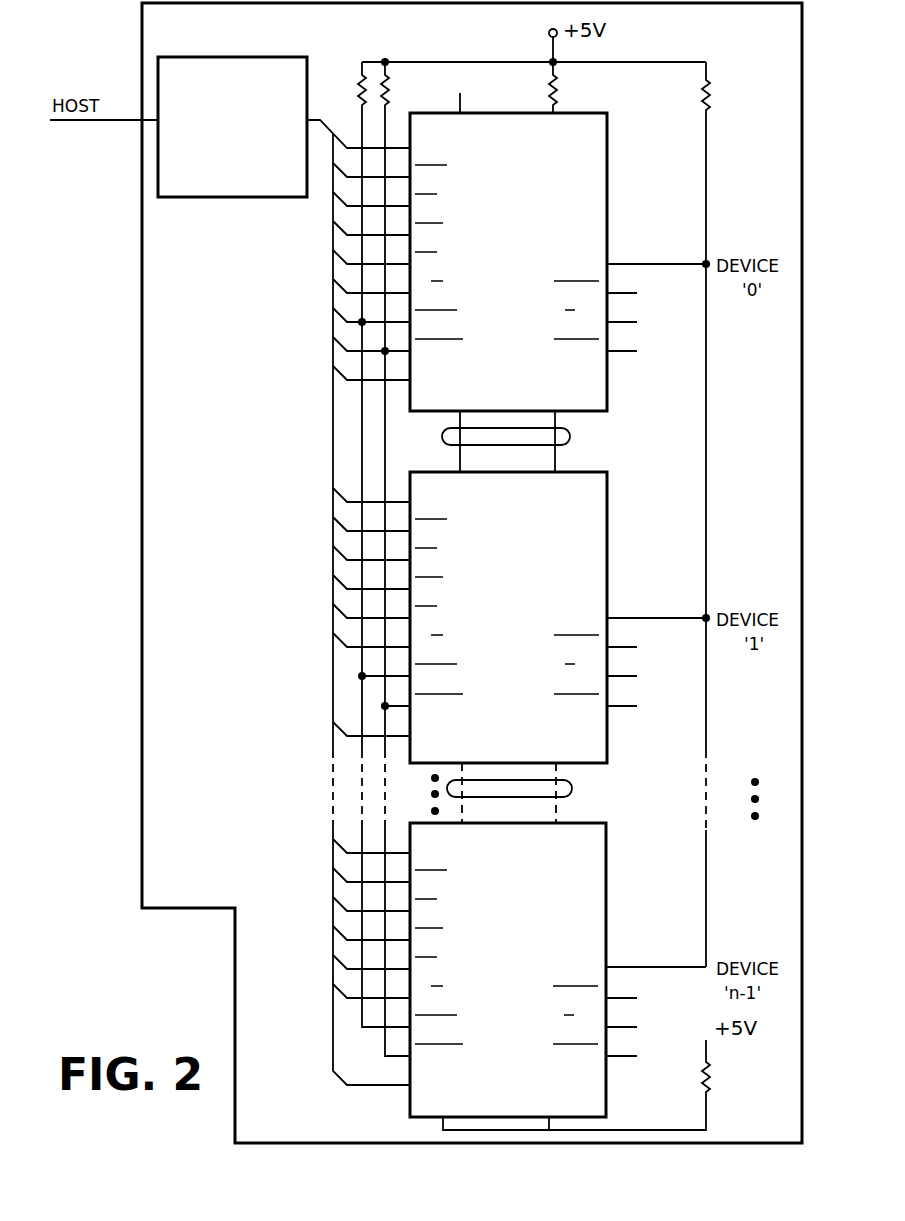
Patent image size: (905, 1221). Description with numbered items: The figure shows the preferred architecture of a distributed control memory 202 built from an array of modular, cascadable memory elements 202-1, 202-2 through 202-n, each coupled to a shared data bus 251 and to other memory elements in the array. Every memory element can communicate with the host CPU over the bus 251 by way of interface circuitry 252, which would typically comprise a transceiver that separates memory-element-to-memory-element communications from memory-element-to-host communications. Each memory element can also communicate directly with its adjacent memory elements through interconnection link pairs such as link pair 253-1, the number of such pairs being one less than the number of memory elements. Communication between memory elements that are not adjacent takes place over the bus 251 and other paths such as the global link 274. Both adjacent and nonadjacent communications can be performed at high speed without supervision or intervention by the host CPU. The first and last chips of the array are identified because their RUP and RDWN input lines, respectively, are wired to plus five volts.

The distributed control memory 202 is at (142, 473).
The interface circuitry 252 is at (277, 57).
The bus 251 is at (333, 431).
The memory element 202-1 is at (608, 153).
The memory element 202-2 is at (608, 530).
The memory element 202-n is at (606, 898).
The interconnection link pair 253-1 is at (570, 436).
The global link 274 is at (708, 372).